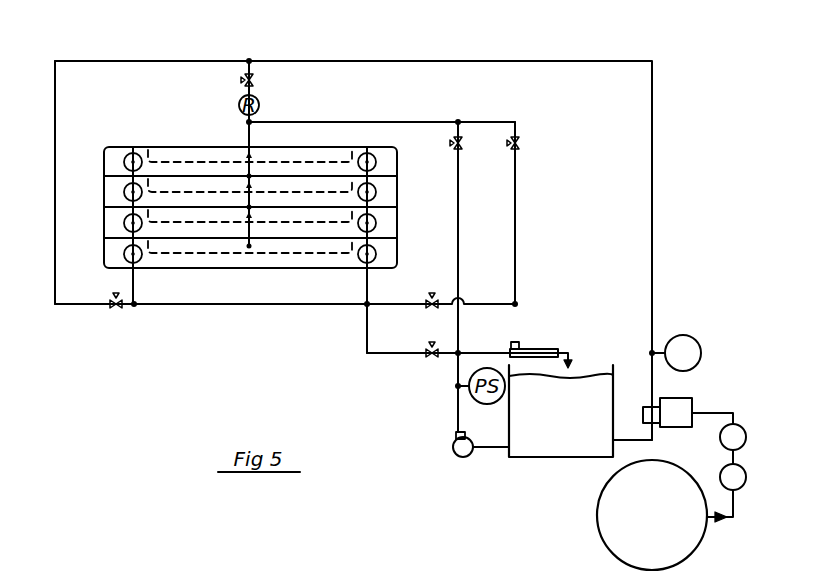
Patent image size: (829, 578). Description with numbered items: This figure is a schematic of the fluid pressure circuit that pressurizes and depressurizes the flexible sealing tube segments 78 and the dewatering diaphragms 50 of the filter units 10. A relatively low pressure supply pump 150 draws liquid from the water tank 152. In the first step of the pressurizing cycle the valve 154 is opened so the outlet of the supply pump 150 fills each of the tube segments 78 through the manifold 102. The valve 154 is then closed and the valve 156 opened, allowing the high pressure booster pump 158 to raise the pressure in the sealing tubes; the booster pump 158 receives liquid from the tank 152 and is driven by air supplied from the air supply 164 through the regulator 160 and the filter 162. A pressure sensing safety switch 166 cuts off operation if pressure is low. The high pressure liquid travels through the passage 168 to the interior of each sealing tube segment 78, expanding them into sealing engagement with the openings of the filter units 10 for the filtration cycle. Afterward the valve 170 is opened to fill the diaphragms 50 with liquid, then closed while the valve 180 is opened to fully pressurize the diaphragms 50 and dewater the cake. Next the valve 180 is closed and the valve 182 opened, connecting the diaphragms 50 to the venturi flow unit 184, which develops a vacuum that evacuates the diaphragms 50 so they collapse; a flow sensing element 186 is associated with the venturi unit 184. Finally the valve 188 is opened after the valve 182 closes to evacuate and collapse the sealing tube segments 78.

The filter unit 10 is at (332, 175).
The dewatering diaphragm 50 is at (197, 192).
The sealing tube segment 78 is at (123, 192).
The manifold 102 is at (129, 278).
The low pressure supply pump 150 is at (452, 452).
The water tank 152 is at (616, 372).
The valve 154 is at (431, 360).
The valve 156 is at (116, 311).
The high pressure booster pump 158 is at (683, 397).
The regulator 160 is at (747, 436).
The filter 162 is at (747, 476).
The air supply 164 is at (700, 538).
The pressure sensing safety switch 166 is at (692, 337).
The passage 168 is at (405, 58).
The valve 170 is at (463, 150).
The valve 180 is at (255, 81).
The valve 182 is at (520, 143).
The venturi flow unit 184 is at (544, 347).
The flow switch 186 is at (510, 345).
The valve 188 is at (431, 311).